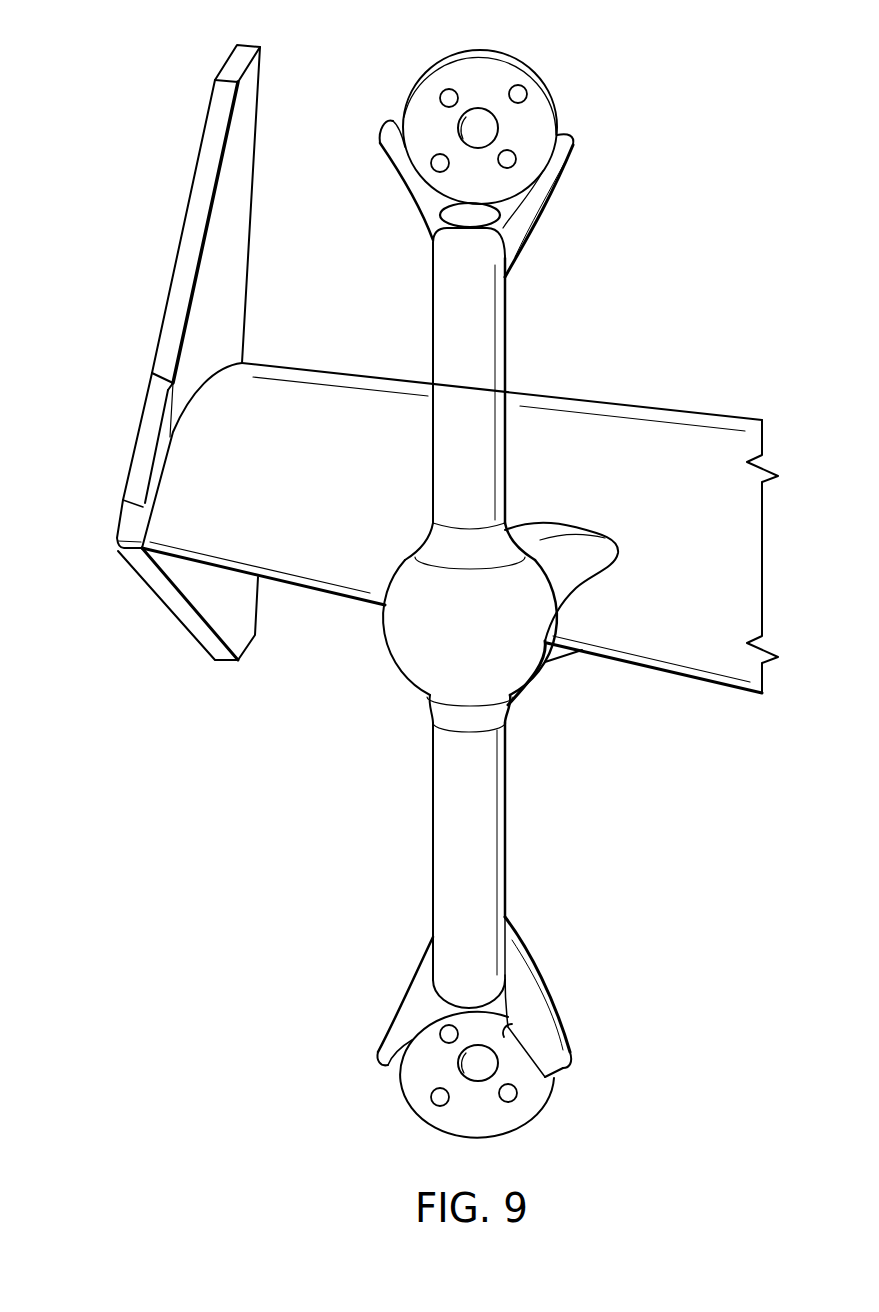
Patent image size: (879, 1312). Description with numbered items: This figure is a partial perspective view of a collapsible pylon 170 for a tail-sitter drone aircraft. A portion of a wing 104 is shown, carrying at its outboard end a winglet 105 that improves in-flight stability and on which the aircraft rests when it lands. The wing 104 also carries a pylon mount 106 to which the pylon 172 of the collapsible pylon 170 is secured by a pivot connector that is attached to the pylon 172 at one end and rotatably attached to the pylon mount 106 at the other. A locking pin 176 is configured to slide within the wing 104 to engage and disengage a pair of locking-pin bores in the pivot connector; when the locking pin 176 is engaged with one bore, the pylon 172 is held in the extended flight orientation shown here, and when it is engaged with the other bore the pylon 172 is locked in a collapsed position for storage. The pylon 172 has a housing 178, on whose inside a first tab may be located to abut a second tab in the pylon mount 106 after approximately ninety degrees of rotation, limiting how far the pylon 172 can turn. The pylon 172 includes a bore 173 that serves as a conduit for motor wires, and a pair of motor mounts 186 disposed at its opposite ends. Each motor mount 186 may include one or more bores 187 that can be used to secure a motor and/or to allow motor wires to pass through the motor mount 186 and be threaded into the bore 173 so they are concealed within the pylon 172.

The wing 104 is at (320, 365).
The winglet 105 is at (193, 172).
The pylon mount 106 is at (568, 530).
The collapsible pylon 170 is at (366, 783).
The pylon 172 is at (432, 851).
The bore 173 is at (445, 212).
The locking pin 176 is at (140, 445).
The housing 178 is at (388, 652).
The motor mount 186 is at (463, 52).
The bore 187 is at (519, 100).